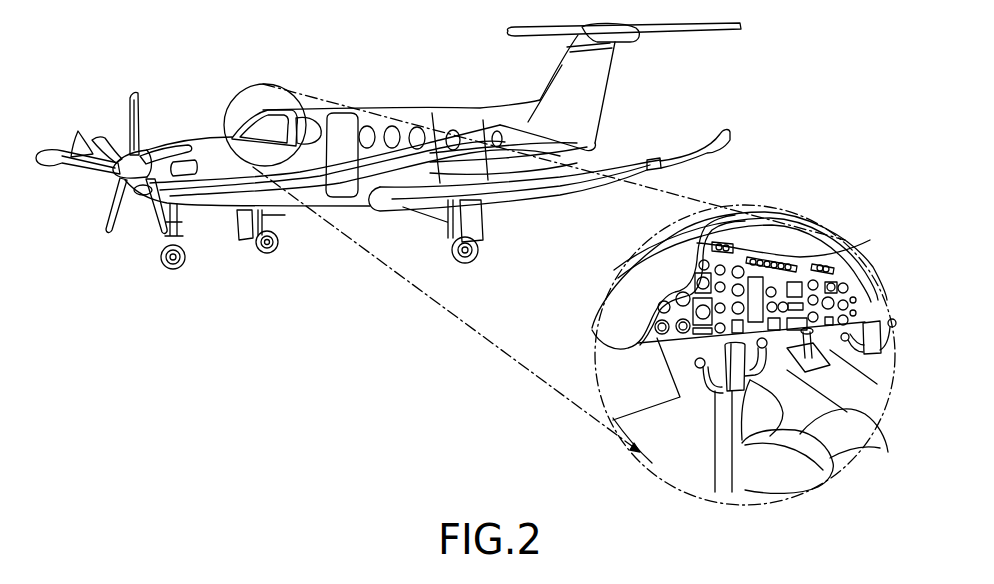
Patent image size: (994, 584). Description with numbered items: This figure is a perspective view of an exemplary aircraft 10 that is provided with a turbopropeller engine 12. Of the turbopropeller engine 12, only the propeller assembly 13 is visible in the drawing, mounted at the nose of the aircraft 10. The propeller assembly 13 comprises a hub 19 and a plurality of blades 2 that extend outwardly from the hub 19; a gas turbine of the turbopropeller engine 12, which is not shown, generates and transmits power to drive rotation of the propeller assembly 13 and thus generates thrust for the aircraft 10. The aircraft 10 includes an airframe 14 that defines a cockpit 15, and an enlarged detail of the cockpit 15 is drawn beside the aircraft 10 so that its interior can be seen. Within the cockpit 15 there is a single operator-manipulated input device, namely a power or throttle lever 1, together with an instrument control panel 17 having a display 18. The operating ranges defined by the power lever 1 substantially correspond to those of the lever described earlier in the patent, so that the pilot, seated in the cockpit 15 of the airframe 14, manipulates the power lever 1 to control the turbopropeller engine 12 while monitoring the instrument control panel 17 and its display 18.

The power lever 1 is at (781, 398).
The blades 2 is at (110, 150).
The aircraft 10 is at (132, 280).
The turbopropeller engine 12 is at (185, 267).
The propeller assembly 13 is at (107, 237).
The airframe 14 is at (412, 110).
The cockpit 15 is at (705, 219).
The instrument control panel 17 is at (750, 255).
The display 18 is at (760, 290).
The hub 19 is at (116, 178).